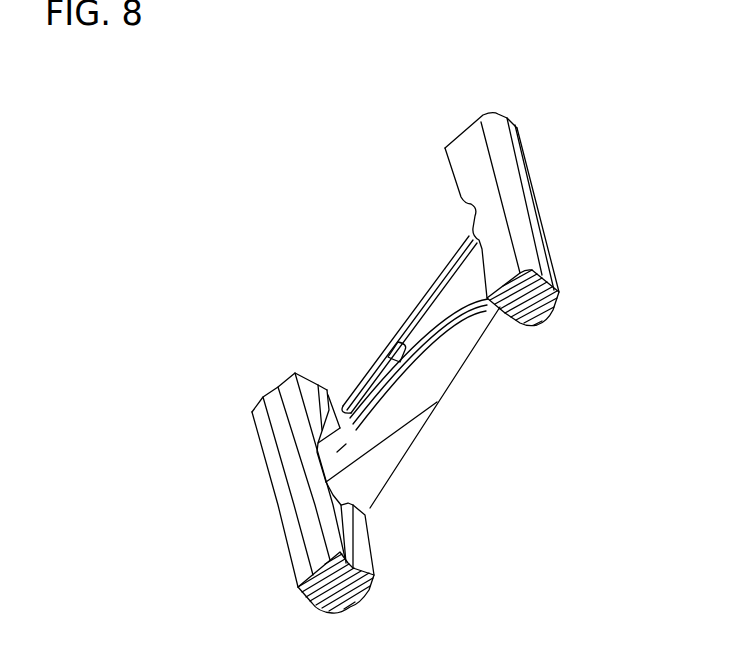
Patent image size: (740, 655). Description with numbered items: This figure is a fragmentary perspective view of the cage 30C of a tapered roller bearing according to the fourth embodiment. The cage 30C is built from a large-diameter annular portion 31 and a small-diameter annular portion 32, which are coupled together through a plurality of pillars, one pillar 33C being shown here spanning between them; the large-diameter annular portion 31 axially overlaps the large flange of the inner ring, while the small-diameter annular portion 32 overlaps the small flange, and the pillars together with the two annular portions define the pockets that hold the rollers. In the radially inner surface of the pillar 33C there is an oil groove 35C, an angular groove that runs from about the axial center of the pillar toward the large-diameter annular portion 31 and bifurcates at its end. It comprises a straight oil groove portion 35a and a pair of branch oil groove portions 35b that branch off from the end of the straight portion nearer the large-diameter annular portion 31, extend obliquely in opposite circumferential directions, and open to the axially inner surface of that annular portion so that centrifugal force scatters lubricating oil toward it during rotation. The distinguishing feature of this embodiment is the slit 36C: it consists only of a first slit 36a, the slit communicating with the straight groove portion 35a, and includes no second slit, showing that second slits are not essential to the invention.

The cage 30C is at (454, 355).
The large-diameter annular portion 31 is at (280, 500).
The small-diameter annular portion 32 is at (527, 233).
The pillar 33C is at (425, 380).
The oil groove 35C is at (376, 391).
The straight oil groove portion 35a is at (391, 359).
The branch oil groove portion 35b is at (387, 433).
The slit 36C is at (492, 364).
The first slit 36a is at (453, 327).